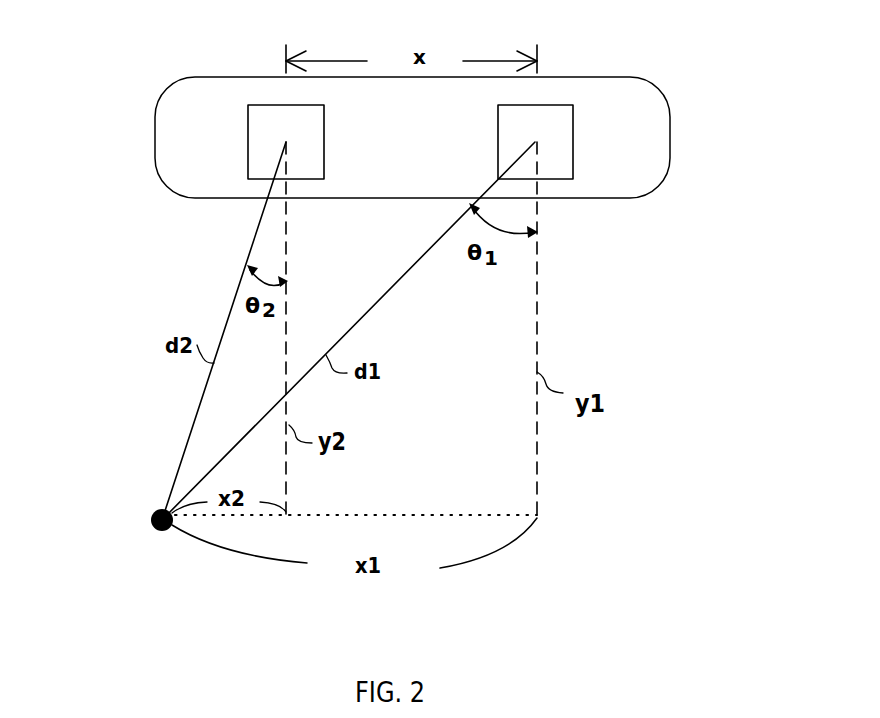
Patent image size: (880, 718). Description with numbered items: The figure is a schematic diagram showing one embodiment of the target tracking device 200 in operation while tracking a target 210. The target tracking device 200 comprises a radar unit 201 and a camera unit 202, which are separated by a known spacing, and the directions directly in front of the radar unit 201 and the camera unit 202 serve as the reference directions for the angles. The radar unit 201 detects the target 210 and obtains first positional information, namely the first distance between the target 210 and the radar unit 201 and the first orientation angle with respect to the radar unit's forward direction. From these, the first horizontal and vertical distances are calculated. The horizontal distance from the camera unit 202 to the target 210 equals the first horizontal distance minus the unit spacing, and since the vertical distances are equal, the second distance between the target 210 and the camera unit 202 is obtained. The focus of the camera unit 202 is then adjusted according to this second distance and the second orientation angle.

The target tracking device 200 is at (647, 190).
The radar unit 201 is at (553, 104).
The camera unit 202 is at (265, 103).
The target 210 is at (153, 526).